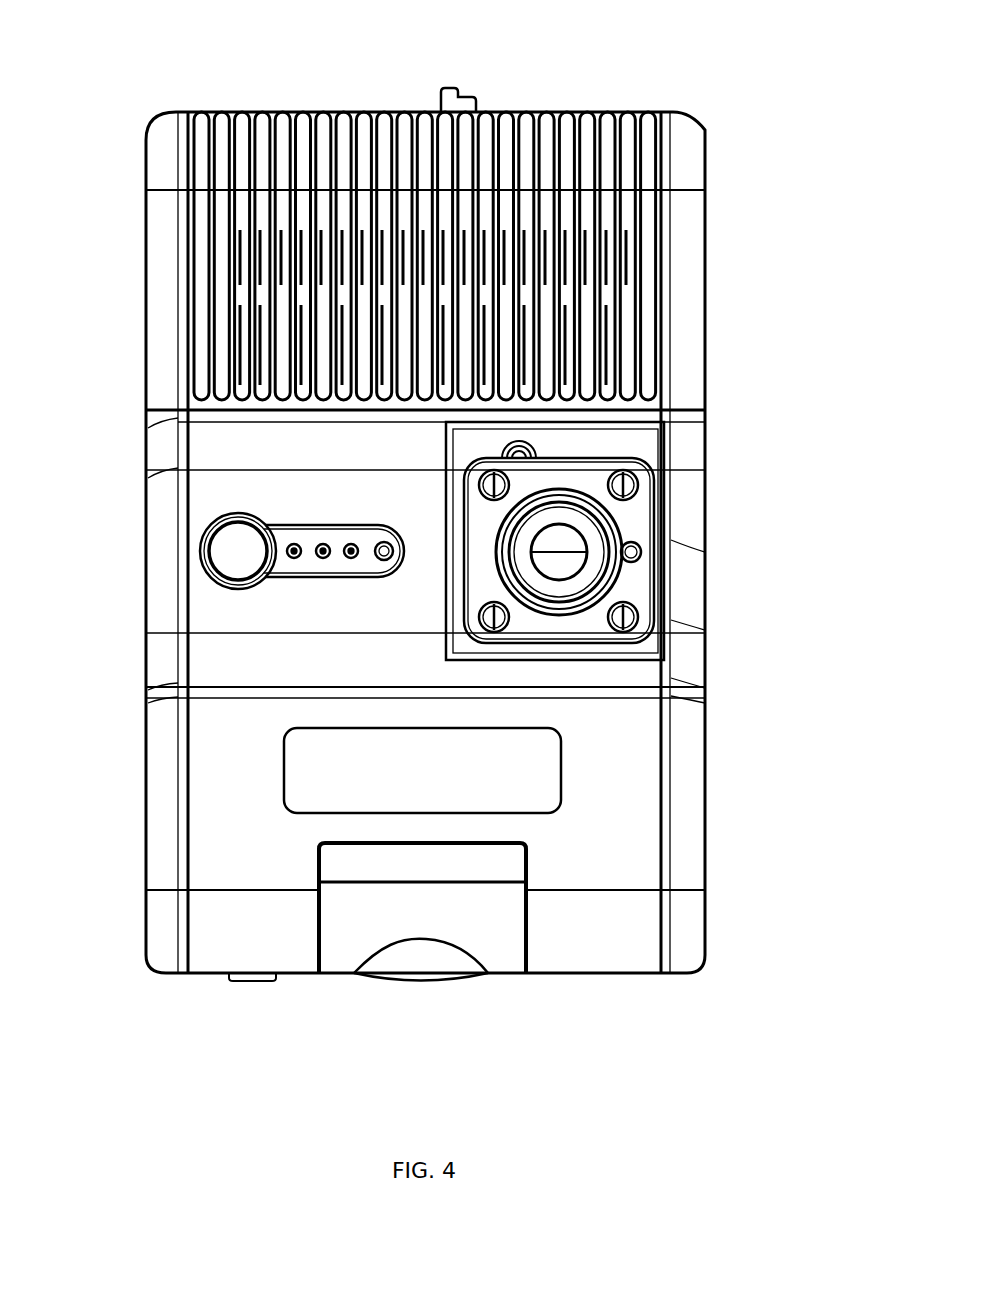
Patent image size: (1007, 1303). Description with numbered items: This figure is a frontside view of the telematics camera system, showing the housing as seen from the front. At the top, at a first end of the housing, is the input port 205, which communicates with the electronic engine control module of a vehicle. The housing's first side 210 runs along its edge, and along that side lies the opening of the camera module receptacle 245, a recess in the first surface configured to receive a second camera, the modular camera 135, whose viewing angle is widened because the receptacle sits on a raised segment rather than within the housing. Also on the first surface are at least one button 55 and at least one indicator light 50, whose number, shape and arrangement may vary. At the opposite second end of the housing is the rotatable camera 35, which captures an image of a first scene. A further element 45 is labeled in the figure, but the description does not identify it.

The rotatable camera 35 is at (465, 992).
The vent slots 45 is at (473, 245).
The indicator light 50 is at (343, 551).
The button 55 is at (236, 563).
The modular camera 135 is at (563, 552).
The input port 205 is at (458, 95).
The first side 210 is at (705, 770).
The camera module receptacle 245 is at (573, 442).